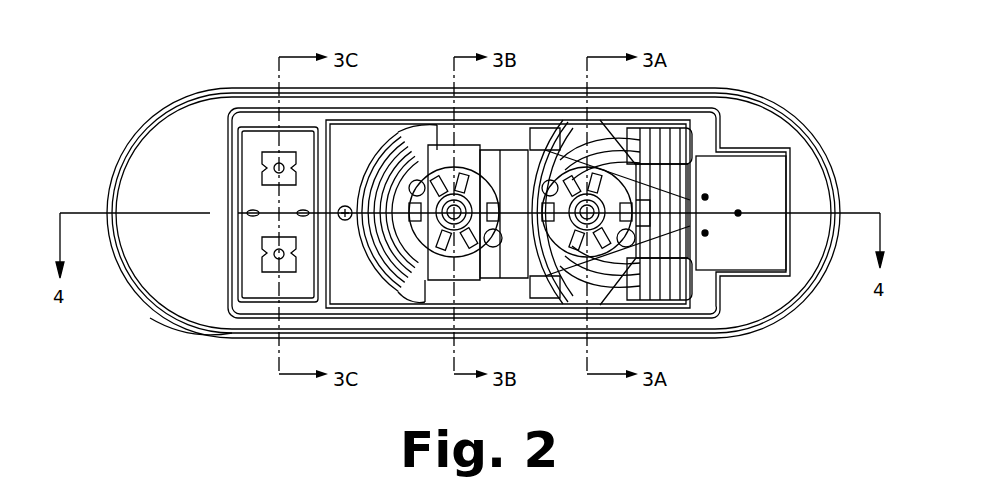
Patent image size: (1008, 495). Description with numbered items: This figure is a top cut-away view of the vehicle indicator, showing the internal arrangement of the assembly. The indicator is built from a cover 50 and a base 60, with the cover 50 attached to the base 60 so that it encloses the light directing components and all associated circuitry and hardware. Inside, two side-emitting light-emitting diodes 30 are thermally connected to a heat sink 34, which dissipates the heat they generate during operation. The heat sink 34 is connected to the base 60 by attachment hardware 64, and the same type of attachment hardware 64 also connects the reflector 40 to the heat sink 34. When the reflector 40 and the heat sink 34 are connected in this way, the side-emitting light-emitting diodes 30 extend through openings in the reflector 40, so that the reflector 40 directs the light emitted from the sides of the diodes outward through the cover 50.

The side-emitting light-emitting diode 30 is at (405, 96).
The heat sink 34 is at (346, 322).
The reflector 40 is at (396, 326).
The cover 50 is at (195, 98).
The base 60 is at (206, 323).
The attachment hardware 64 is at (345, 205).